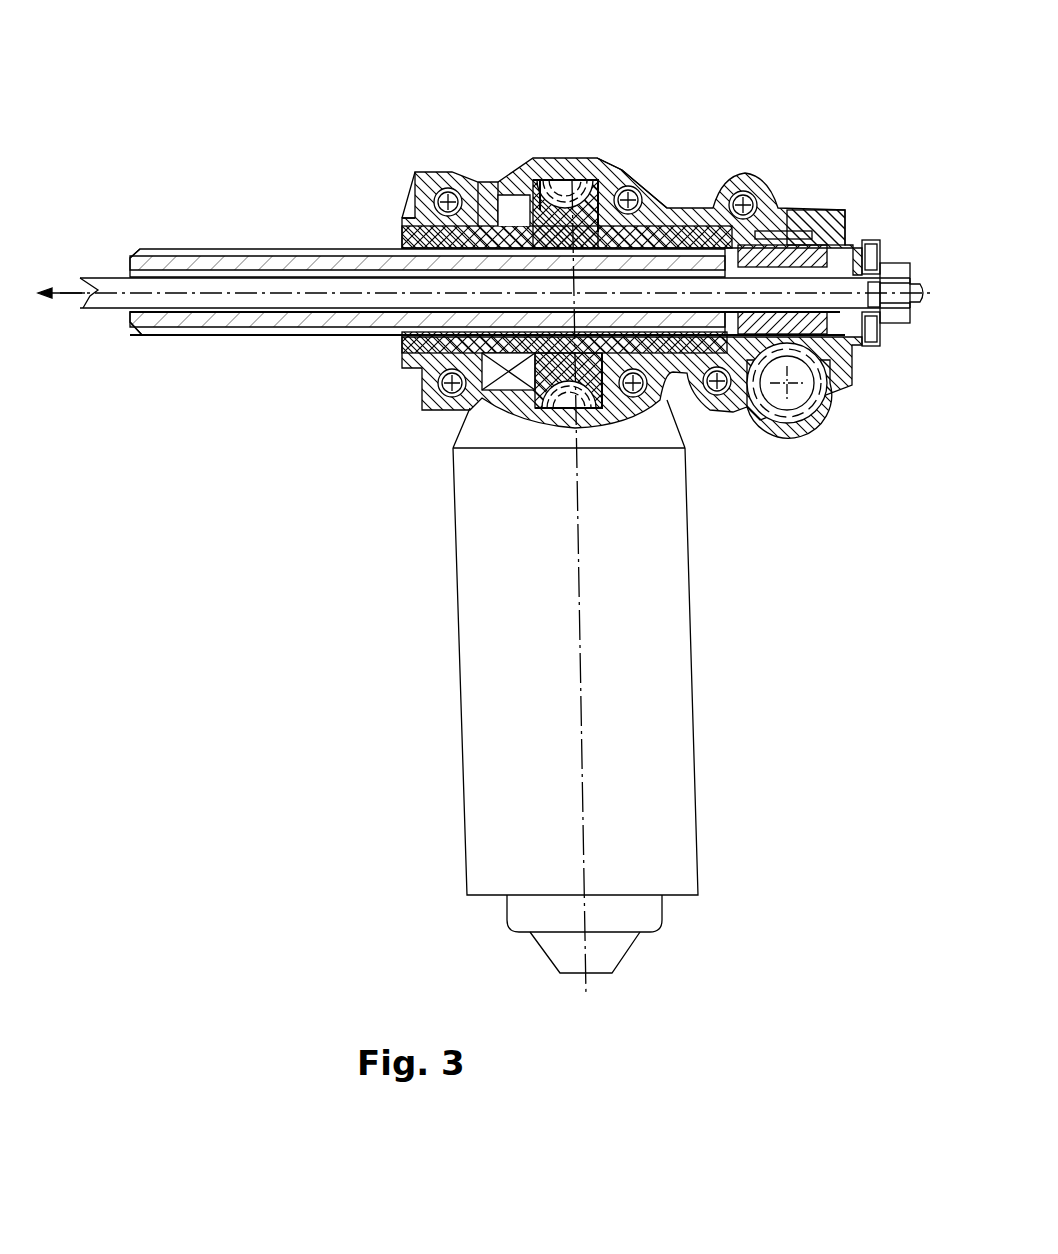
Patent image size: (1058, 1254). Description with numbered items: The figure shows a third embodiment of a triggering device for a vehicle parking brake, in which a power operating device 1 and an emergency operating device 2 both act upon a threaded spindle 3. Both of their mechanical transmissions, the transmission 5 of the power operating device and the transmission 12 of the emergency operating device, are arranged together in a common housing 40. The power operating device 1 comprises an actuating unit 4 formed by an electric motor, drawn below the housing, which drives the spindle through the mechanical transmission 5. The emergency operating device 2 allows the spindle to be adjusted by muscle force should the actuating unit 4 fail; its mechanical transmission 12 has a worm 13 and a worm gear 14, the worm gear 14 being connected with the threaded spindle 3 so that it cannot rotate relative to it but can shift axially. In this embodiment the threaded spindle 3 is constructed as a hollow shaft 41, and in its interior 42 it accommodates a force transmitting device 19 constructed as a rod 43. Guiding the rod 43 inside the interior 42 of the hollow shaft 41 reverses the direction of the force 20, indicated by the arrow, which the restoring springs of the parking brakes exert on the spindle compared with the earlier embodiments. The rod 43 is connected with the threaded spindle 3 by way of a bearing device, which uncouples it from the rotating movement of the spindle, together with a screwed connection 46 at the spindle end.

The power operating device 1 is at (627, 301).
The emergency operating device 2 is at (632, 293).
The threaded spindle 3 is at (487, 260).
The hollow shaft 41 is at (270, 262).
The actuating unit 4 is at (685, 690).
The mechanical transmission 5 is at (542, 168).
The mechanical transmission 12 is at (870, 215).
The worm 13 is at (782, 408).
The worm gear 14 is at (785, 250).
The force transmitting device 19 is at (497, 337).
The rod 43 is at (925, 302).
The direction of the force 20 is at (66, 296).
The housing 40 is at (622, 178).
The interior 42 is at (120, 262).
The screwed connection 46 is at (893, 265).